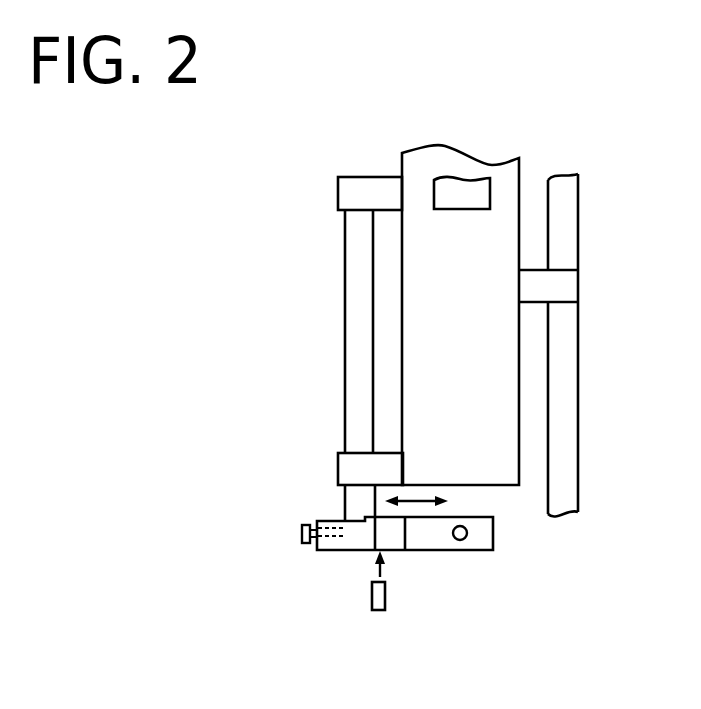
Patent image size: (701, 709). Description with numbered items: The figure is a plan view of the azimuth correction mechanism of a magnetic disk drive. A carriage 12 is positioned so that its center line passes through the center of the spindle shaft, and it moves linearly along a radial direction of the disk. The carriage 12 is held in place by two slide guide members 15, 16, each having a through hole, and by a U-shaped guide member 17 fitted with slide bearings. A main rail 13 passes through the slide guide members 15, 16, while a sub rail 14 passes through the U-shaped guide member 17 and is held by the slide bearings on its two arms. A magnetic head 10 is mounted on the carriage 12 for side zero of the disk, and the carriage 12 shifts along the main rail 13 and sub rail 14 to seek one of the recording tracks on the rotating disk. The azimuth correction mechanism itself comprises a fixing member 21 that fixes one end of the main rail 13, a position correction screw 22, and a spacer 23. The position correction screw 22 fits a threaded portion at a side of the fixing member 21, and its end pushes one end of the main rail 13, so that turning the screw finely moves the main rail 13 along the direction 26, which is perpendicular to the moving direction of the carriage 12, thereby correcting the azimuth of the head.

The magnetic head 10 is at (485, 190).
The carriage 12 is at (497, 377).
The main rail 13 is at (348, 302).
The sub rail 14 is at (560, 229).
The slide guide member 15 is at (347, 192).
The slide guide member 16 is at (343, 470).
The U-shaped guide member 17 is at (560, 283).
The fixing member 21 is at (347, 553).
The position correction screw 22 is at (300, 536).
The spacer 23 is at (383, 611).
The direction 26 is at (414, 503).